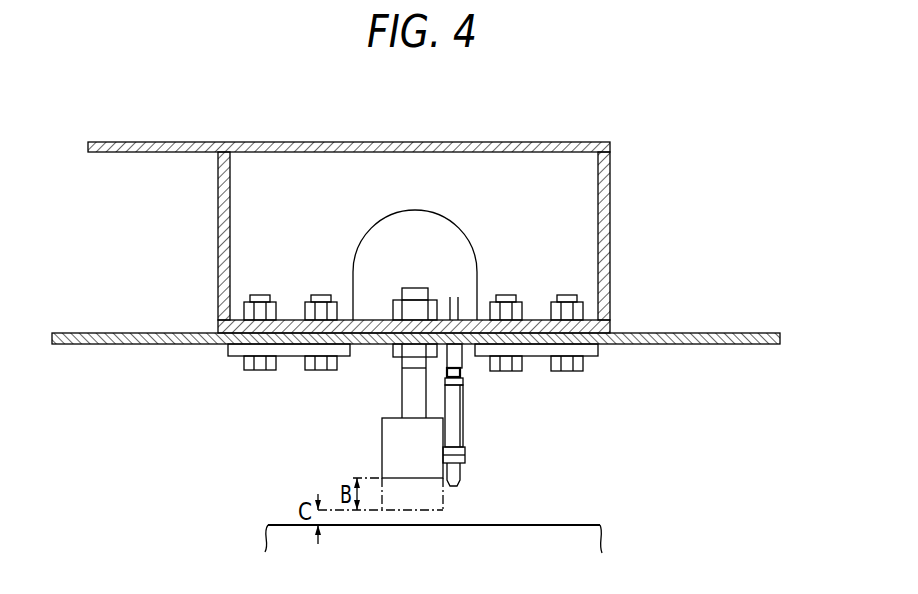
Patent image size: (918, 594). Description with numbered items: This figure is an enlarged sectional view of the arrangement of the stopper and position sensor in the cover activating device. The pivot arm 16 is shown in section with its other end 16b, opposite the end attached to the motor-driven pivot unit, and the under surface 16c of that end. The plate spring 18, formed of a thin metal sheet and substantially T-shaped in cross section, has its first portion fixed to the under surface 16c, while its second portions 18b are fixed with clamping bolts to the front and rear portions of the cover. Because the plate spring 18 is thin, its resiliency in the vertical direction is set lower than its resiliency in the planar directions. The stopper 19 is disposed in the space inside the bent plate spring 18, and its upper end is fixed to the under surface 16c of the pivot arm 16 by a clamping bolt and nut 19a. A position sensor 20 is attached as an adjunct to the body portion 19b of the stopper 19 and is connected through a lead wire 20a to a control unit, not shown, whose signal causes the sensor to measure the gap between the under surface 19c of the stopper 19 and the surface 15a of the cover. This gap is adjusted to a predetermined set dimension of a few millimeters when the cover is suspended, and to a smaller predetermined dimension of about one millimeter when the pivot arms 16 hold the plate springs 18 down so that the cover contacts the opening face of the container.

The pivot arm 16 is at (385, 251).
The other end of the pivot arm 16b is at (611, 177).
The under surface of the pivot arm 16c is at (362, 335).
The plate spring 18 is at (416, 337).
The second portion of the plate spring 18b is at (221, 344).
The stopper 19 is at (413, 391).
The clamping bolt and nut 19a is at (397, 354).
The body portion of the stopper 19b is at (461, 463).
The under surface of the stopper 19c is at (405, 477).
The position sensor 20 is at (491, 373).
The lead wire 20a is at (460, 300).
The surface of the cover 15a is at (565, 528).